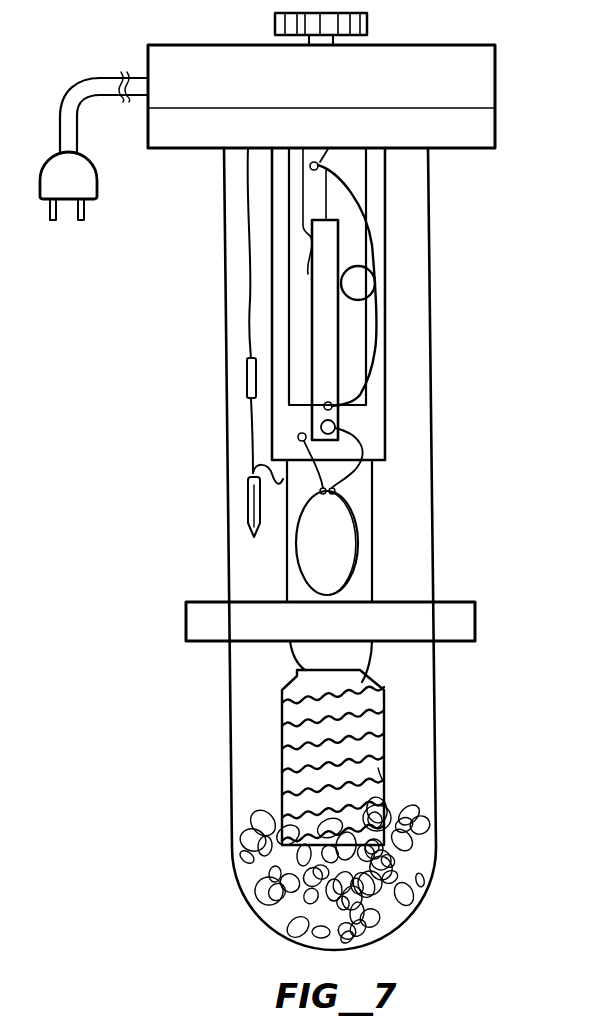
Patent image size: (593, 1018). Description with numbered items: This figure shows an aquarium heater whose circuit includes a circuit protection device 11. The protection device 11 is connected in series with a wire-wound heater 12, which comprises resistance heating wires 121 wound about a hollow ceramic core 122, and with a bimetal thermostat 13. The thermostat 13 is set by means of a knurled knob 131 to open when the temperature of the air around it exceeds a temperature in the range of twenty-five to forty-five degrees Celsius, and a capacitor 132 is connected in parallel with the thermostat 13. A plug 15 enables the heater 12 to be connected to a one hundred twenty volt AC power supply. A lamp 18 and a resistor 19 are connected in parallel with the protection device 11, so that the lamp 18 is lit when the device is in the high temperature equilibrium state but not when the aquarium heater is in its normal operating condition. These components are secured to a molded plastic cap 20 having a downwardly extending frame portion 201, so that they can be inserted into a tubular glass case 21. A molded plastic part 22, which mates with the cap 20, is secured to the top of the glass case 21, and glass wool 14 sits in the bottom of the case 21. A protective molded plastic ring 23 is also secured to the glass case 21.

The circuit protection device 11 is at (343, 542).
The wire-wound heater 12 is at (272, 733).
The bimetal thermostat 13 is at (318, 277).
The glass wool 14 is at (233, 857).
The plug 15 is at (96, 178).
The lamp 18 is at (248, 502).
The resistor 19 is at (247, 376).
The molded plastic cap 20 is at (483, 83).
The tubular glass case 21 is at (433, 488).
The molded plastic part 22 is at (483, 133).
The protective molded plastic ring 23 is at (186, 623).
The resistance heating wires 121 is at (362, 700).
The hollow ceramic core 122 is at (375, 773).
The knurled knob 131 is at (368, 22).
The capacitor 132 is at (364, 285).
The frame portion 201 is at (387, 420).